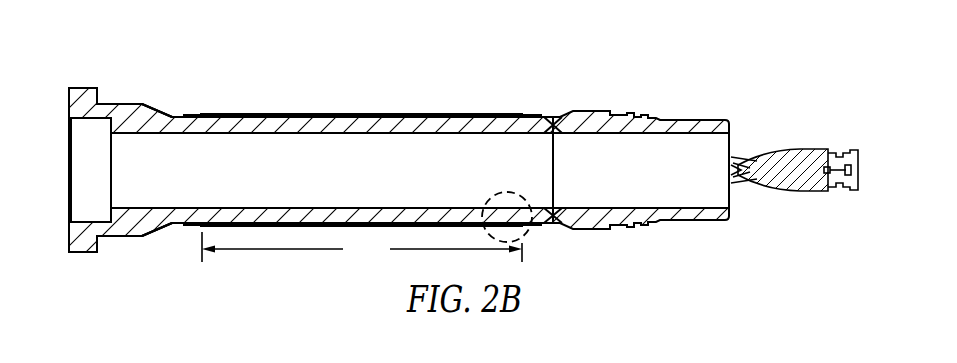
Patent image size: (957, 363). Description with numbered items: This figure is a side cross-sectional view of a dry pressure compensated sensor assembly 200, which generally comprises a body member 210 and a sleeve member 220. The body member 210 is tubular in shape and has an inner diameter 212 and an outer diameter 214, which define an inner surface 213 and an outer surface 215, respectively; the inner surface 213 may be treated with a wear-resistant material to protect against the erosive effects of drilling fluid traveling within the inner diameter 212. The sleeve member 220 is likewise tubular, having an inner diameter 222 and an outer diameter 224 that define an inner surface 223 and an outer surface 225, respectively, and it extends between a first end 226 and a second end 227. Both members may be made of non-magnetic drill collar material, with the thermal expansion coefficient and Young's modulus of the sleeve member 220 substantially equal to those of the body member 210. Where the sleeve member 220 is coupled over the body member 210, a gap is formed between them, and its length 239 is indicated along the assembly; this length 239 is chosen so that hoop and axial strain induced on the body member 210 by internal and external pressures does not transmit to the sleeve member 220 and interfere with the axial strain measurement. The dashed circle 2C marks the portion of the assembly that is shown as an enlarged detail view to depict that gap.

The dry pressure compensated sensor assembly 200 is at (139, 46).
The body member 210 is at (133, 104).
The inner diameter 212 is at (188, 134).
The inner surface 213 is at (420, 170).
The outer diameter 214 is at (172, 117).
The outer surface 215 is at (157, 170).
The sleeve member 220 is at (383, 113).
The inner diameter 222 is at (510, 113).
The inner surface 223 is at (506, 170).
The outer diameter 224 is at (487, 113).
The outer surface 225 is at (361, 170).
The first end 226 is at (184, 114).
The second end 227 is at (545, 114).
The length 239 is at (362, 247).
The enlarged detail view portion 2C is at (489, 196).